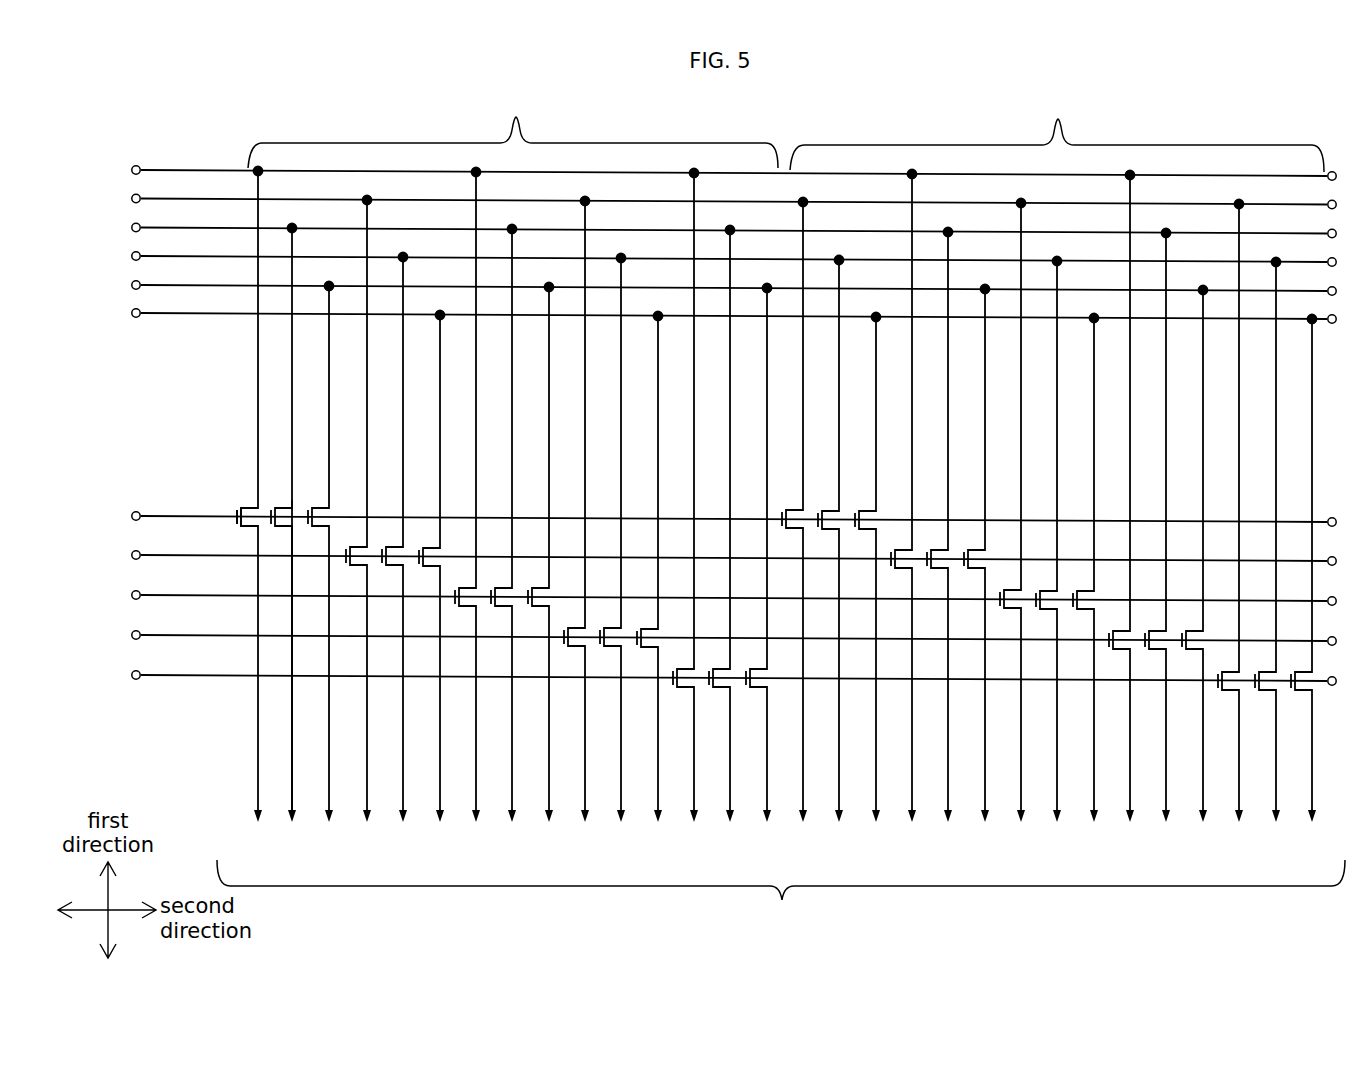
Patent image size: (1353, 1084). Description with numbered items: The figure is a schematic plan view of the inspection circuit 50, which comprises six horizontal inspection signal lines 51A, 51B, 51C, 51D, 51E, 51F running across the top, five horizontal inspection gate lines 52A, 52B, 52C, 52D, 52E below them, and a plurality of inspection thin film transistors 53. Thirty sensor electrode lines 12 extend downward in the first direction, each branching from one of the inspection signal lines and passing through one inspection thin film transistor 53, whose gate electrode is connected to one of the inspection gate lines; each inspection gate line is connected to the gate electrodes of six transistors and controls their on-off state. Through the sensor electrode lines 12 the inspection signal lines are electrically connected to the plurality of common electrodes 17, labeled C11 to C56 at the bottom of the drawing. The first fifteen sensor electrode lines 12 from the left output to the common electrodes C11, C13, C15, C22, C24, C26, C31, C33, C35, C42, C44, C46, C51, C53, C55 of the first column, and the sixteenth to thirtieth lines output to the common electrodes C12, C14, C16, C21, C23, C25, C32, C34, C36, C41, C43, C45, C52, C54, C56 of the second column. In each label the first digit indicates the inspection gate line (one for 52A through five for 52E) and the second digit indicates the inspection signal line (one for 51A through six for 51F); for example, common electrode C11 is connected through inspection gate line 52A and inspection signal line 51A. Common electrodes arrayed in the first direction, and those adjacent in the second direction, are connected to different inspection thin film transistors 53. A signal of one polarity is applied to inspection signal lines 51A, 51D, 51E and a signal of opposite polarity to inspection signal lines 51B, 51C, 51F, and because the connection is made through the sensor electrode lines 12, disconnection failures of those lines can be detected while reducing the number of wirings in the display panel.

The inspection circuit 50 is at (1290, 127).
The inspection signal line 51A is at (150, 169).
The inspection signal line 51B is at (185, 198).
The inspection signal line 51C is at (208, 227).
The inspection signal line 51D is at (160, 256).
The inspection signal line 51E is at (185, 285).
The inspection signal line 51F is at (210, 313).
The inspection gate line 52A is at (176, 514).
The inspection gate line 52B is at (197, 555).
The inspection gate line 52C is at (183, 595).
The inspection gate line 52D is at (170, 635).
The inspection gate line 52E is at (193, 675).
The inspection thin film transistor 53 is at (276, 485).
The sensor electrode line 12 is at (292, 797).
The common electrode 17 is at (781, 905).
The common electrode C11 is at (253, 521).
The common electrode C13 is at (287, 550).
The common electrode C15 is at (324, 579).
The common electrode C22 is at (362, 536).
The common electrode C24 is at (398, 564).
The common electrode C26 is at (435, 593).
The common electrode C31 is at (471, 522).
The common electrode C33 is at (507, 550).
The common electrode C35 is at (544, 579).
The common electrode C42 is at (580, 536).
The common electrode C44 is at (616, 565).
The common electrode C46 is at (653, 594).
The common electrode C51 is at (689, 522).
The common electrode C53 is at (725, 551).
The common electrode C55 is at (762, 580).
The common electrode C12 is at (798, 537).
The common electrode C14 is at (834, 566).
The common electrode C16 is at (871, 594).
The common electrode C21 is at (907, 523).
The common electrode C23 is at (943, 552).
The common electrode C25 is at (980, 580).
The common electrode C32 is at (1016, 537).
The common electrode C34 is at (1052, 566).
The common electrode C36 is at (1089, 595).
The common electrode C41 is at (1125, 523).
The common electrode C43 is at (1161, 552).
The common electrode C45 is at (1198, 581).
The common electrode C52 is at (1234, 538).
The common electrode C54 is at (1271, 567).
The common electrode C56 is at (1307, 595).